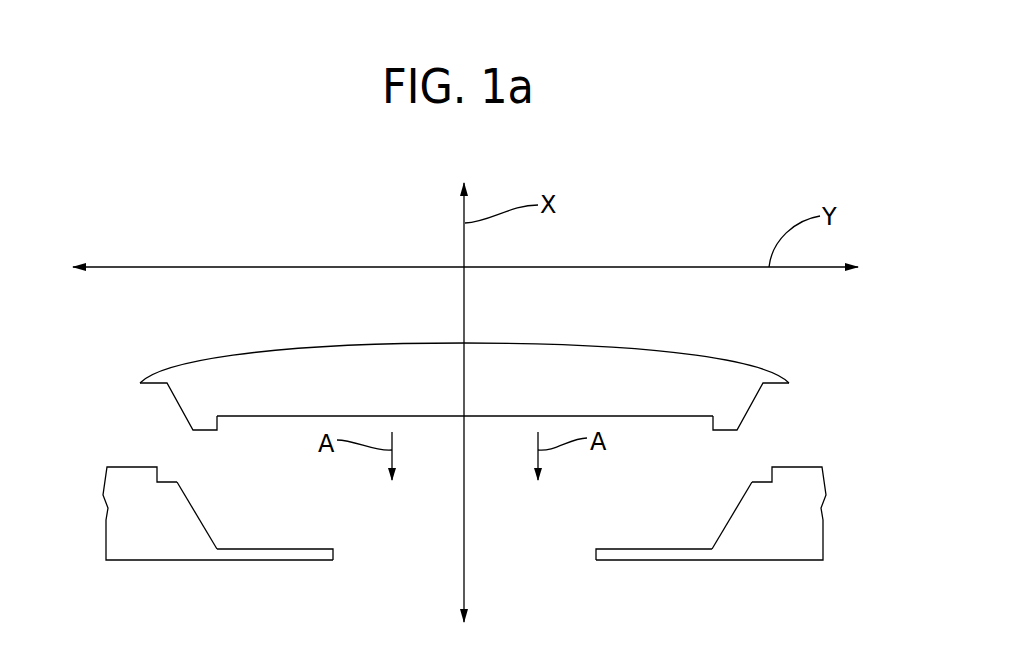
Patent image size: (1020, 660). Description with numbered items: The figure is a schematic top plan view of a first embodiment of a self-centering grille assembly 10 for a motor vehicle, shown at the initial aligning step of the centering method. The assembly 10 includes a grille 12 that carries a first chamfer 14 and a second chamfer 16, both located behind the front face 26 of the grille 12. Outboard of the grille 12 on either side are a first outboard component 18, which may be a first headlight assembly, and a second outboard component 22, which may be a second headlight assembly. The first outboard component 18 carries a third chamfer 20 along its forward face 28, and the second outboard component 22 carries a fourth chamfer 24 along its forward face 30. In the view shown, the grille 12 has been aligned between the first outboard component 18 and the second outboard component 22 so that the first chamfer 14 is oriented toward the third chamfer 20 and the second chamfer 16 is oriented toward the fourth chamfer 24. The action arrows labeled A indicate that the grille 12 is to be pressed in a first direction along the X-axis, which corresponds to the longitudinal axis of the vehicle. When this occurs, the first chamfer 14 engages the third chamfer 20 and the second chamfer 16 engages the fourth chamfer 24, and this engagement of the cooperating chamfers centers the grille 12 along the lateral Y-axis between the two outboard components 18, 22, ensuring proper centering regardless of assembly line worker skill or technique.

The self-centering grille assembly 10 is at (668, 227).
The grille 12 is at (375, 352).
The first chamfer 14 is at (178, 405).
The second chamfer 16 is at (753, 407).
The first outboard component 18 is at (132, 552).
The third chamfer 20 is at (192, 502).
The second outboard component 22 is at (775, 553).
The fourth chamfer 24 is at (738, 502).
The front face 26 is at (566, 344).
The forward face 28 is at (262, 548).
The forward face 30 is at (645, 548).